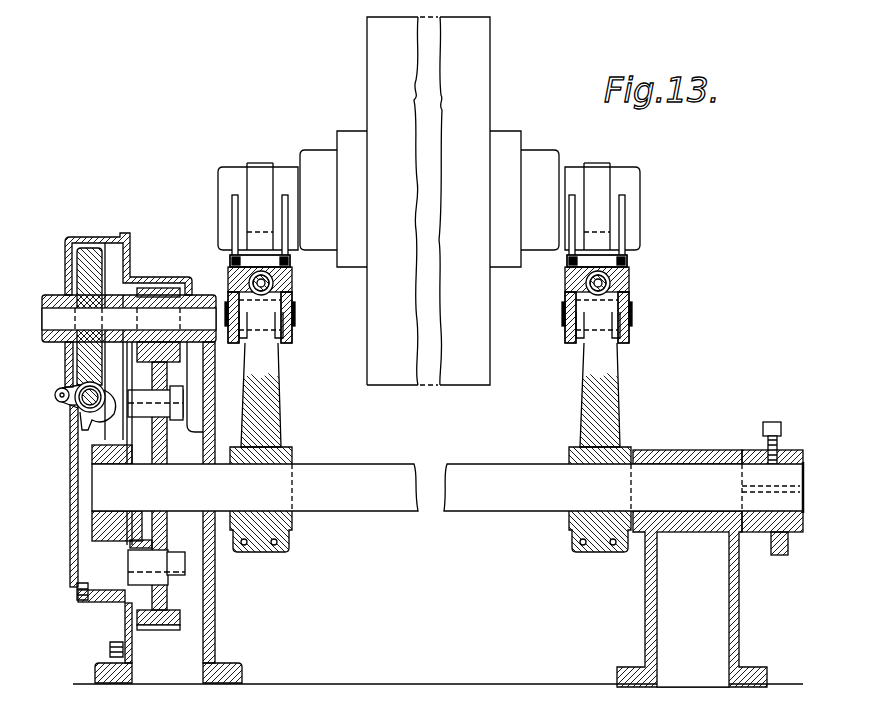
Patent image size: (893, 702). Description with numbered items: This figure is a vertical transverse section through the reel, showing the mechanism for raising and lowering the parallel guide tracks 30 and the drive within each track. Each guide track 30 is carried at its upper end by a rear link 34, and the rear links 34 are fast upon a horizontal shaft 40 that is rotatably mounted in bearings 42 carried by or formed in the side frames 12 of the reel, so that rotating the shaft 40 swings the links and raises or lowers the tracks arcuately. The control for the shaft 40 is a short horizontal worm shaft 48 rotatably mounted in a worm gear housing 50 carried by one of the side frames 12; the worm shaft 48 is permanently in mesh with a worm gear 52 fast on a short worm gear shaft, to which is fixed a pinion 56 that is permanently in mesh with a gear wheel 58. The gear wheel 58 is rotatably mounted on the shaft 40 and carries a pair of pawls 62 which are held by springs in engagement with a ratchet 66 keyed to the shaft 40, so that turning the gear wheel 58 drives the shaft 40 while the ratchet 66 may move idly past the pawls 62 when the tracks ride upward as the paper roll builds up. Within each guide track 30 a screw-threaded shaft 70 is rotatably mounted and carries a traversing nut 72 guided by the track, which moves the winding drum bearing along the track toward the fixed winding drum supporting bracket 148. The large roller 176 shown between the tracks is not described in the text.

The side frames 12 is at (215, 640).
The guide track 30 is at (250, 322).
The rear link 34 is at (278, 403).
The shaft 40 is at (104, 488).
The bearings 42 is at (690, 520).
The worm shaft 48 is at (86, 405).
The worm gear housing 50 is at (66, 362).
The worm gear 52 is at (88, 262).
The pinion 56 is at (150, 293).
The gear wheel 58 is at (162, 597).
The pawls 62 is at (128, 436).
The ratchet 66 is at (118, 533).
The screw-threaded shaft 70 is at (254, 283).
The traversing nut 72 is at (242, 259).
The winding drum supporting bracket 148 is at (284, 214).
The roller 176 is at (485, 106).